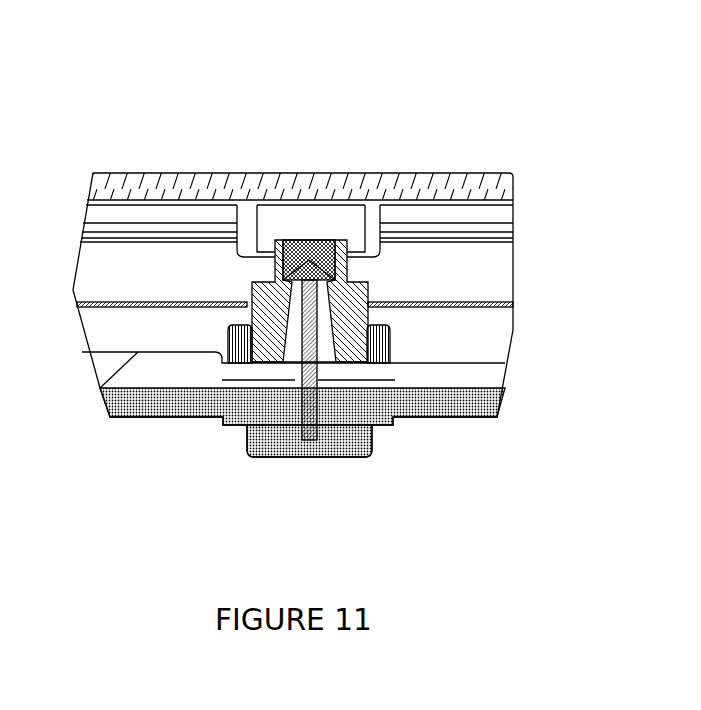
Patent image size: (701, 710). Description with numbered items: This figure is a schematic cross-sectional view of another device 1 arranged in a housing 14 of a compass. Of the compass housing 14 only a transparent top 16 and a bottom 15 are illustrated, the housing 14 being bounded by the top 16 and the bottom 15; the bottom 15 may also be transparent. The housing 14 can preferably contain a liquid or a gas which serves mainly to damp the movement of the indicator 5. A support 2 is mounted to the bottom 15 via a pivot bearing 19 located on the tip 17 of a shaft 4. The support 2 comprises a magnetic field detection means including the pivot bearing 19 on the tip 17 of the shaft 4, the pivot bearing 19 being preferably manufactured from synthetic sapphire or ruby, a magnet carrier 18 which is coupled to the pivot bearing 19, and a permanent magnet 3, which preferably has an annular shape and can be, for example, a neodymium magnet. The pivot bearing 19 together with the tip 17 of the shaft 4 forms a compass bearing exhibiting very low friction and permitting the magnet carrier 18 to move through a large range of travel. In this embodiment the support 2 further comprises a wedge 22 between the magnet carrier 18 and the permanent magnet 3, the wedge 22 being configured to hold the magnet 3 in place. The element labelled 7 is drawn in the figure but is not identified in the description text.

The device 1 is at (393, 278).
The support 2 is at (270, 250).
The permanent magnet 3 is at (387, 352).
The shaft 4 is at (372, 425).
The indicator 5 is at (142, 300).
The boss 7 is at (240, 297).
The housing 14 is at (138, 418).
The bottom 15 is at (190, 388).
The transparent top 16 is at (410, 187).
The tip 17 is at (330, 242).
The magnet carrier 18 is at (272, 363).
The pivot bearing 19 is at (300, 242).
The wedge 22 is at (237, 365).